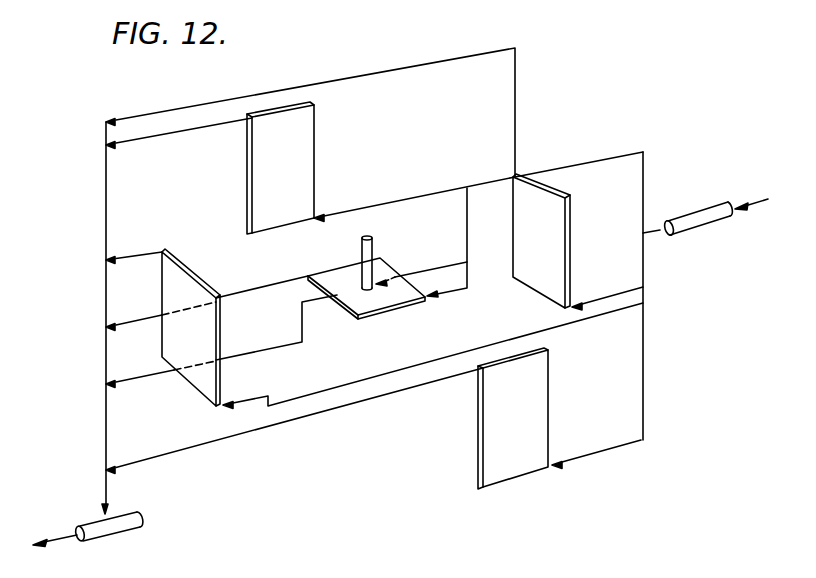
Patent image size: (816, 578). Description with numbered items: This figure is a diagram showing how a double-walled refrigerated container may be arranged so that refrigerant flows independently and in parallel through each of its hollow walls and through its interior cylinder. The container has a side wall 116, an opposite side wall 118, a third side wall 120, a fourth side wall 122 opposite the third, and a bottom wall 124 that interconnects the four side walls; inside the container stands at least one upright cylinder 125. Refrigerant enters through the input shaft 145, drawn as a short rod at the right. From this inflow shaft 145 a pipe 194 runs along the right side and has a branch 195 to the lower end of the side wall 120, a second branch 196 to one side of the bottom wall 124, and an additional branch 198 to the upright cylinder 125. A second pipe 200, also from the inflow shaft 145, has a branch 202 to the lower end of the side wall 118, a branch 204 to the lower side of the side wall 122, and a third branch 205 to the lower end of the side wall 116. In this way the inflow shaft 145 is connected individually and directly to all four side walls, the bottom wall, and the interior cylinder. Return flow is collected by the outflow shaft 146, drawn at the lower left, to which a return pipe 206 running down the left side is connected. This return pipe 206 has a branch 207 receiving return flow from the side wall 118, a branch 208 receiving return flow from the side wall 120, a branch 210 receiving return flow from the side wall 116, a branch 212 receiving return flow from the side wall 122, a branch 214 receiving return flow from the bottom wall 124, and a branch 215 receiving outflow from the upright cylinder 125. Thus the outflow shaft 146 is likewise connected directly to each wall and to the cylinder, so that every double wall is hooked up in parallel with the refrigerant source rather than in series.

The side wall 116 is at (191, 327).
The opposite side wall 118 is at (541, 241).
The third side wall 120 is at (280, 168).
The fourth side wall 122 is at (513, 418).
The bottom wall 124 is at (395, 297).
The upright cylinder 125 is at (372, 235).
The input shaft 145 is at (717, 218).
The outflow shaft 146 is at (112, 530).
The pipe 194 is at (644, 178).
The branch 195 is at (430, 194).
The second branch 196 is at (469, 277).
The additional branch 198 is at (430, 272).
The second pipe 200 is at (644, 265).
The branch 202 is at (608, 297).
The branch 204 is at (588, 455).
The third branch 205 is at (363, 382).
The return pipe 206 is at (105, 222).
The branch 207 is at (420, 63).
The branch 208 is at (179, 133).
The branch 210 is at (146, 253).
The branch 212 is at (318, 414).
The branch 214 is at (135, 321).
The branch 215 is at (150, 376).